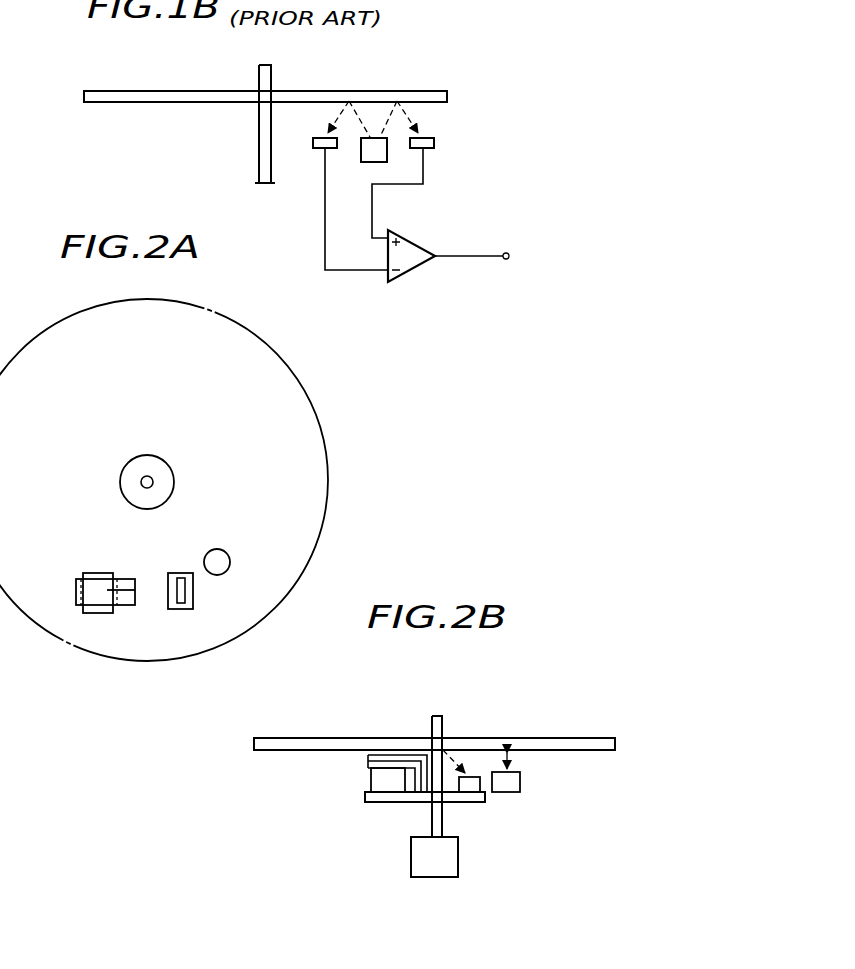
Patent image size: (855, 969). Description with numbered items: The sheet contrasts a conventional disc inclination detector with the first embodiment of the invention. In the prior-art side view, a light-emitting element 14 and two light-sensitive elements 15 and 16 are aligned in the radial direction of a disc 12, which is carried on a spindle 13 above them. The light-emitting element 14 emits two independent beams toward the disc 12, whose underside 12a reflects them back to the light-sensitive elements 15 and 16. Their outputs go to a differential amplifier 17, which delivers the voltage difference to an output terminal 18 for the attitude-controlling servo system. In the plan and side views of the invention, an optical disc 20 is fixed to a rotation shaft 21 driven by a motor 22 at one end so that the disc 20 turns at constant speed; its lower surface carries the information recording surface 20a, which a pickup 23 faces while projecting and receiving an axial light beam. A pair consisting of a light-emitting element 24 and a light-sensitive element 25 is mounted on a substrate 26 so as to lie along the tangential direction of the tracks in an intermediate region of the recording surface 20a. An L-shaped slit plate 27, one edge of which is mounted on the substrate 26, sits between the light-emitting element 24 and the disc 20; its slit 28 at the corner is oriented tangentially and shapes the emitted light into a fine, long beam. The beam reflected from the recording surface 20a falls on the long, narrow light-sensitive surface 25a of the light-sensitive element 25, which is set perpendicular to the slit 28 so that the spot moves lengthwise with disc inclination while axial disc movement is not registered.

In FIG. 1B, the disc 12 is at (427, 93).
In FIG. 1B, the disk surface 12a is at (437, 102).
In FIG. 1B, the spindle 13 is at (273, 77).
In FIG. 1B, the light-emitting element 14 is at (372, 153).
In FIG. 1B, the light-sensitive element 15 is at (434, 143).
In FIG. 1B, the light-sensitive element 16 is at (322, 137).
In FIG. 1B, the differential amplifier 17 is at (410, 248).
In FIG. 1B, the output terminal 18 is at (508, 252).
In FIG. 2A, the optical disc 20 is at (325, 438).
In FIG. 2B, the optical disc 20 is at (590, 738).
In FIG. 2B, the information recording surface 20a is at (575, 751).
In FIG. 2A, the rotation shaft 21 is at (152, 476).
In FIG. 2B, the rotation shaft 21 is at (442, 722).
In FIG. 2A, the motor 22 is at (127, 462).
In FIG. 2B, the motor 22 is at (455, 860).
In FIG. 2A, the pickup 23 is at (217, 548).
In FIG. 2B, the pickup 23 is at (514, 792).
In FIG. 2A, the light-emitting element 24 is at (88, 574).
In FIG. 2B, the light-emitting element 24 is at (380, 778).
In FIG. 2A, the light-sensitive element 25 is at (176, 573).
In FIG. 2B, the light-sensitive element 25 is at (475, 780).
In FIG. 2A, the light-sensitive surface 25a is at (185, 596).
In FIG. 2B, the substrate 26 is at (386, 801).
In FIG. 2A, the slit plate 27 is at (127, 604).
In FIG. 2B, the slit plate 27 is at (368, 761).
In FIG. 2A, the slit 28 is at (125, 583).